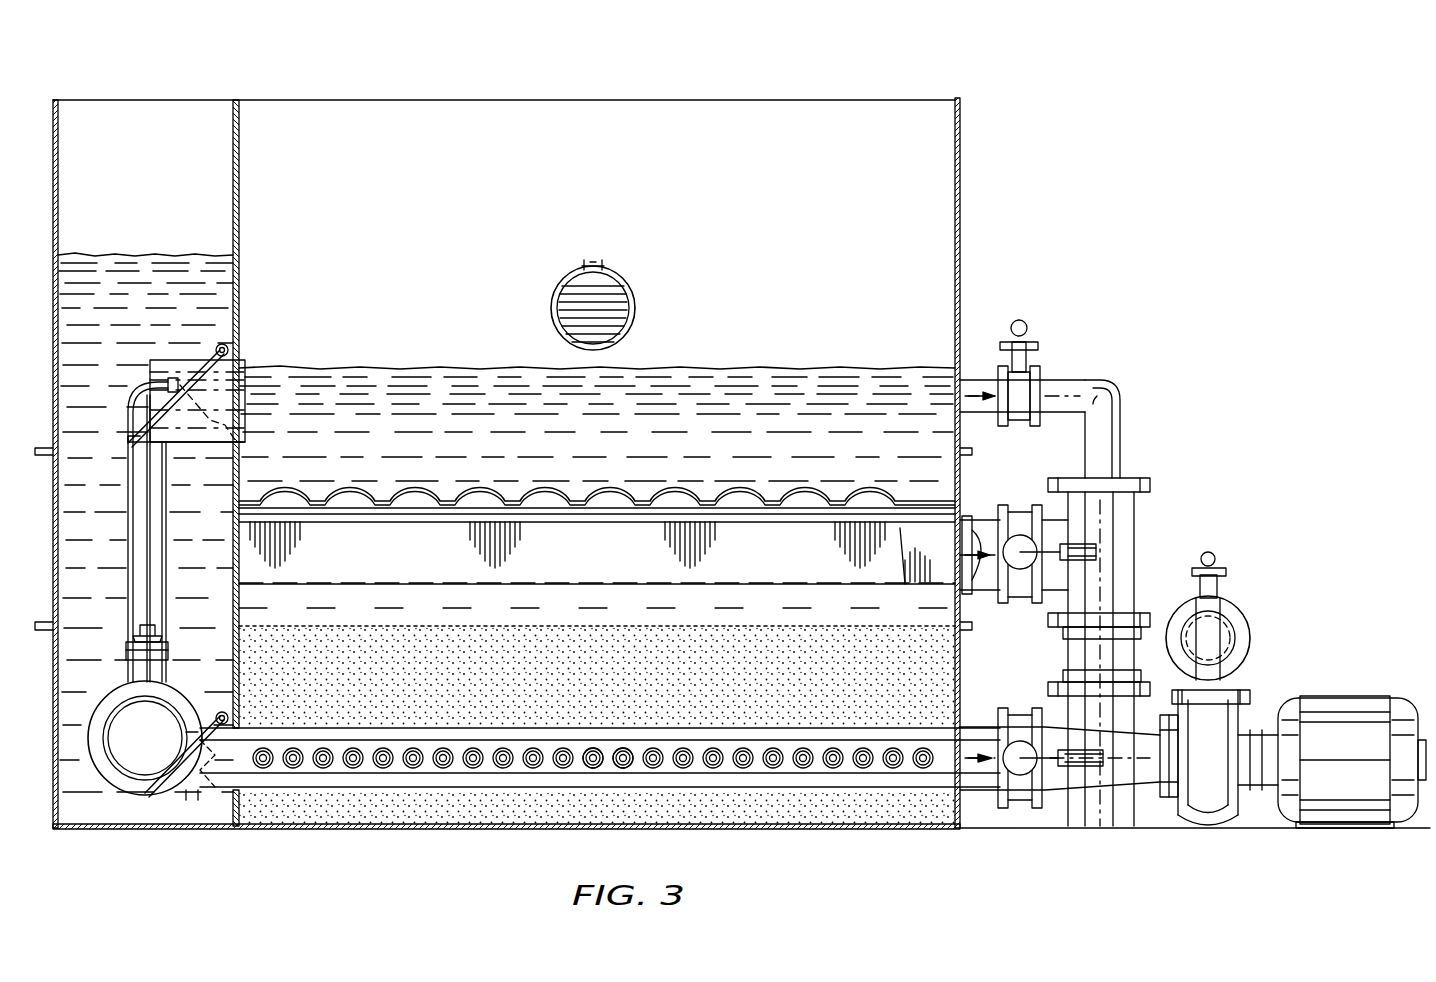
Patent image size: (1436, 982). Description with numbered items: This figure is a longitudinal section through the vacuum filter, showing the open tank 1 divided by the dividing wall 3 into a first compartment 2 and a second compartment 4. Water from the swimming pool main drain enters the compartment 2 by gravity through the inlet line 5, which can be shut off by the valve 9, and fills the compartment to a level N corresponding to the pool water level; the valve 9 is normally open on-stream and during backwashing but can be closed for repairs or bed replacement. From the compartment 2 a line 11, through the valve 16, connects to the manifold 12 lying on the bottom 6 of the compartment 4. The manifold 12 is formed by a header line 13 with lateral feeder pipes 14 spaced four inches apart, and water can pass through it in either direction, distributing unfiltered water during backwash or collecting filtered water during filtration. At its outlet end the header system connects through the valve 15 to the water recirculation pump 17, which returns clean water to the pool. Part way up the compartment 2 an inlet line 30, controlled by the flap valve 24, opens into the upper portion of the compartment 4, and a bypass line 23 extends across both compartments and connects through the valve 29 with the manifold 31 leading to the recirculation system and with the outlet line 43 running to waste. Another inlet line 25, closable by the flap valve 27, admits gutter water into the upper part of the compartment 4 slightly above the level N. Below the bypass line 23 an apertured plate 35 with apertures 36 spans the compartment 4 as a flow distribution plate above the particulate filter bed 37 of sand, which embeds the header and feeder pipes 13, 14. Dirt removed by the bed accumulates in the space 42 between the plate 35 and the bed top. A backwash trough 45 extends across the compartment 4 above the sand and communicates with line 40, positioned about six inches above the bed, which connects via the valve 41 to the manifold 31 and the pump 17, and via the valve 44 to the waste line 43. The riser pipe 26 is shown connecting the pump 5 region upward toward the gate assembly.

The open tank 1 is at (960, 185).
The compartment 2 is at (146, 246).
The dividing wall 3 is at (239, 229).
The compartment 4 is at (420, 249).
The inlet line 5 is at (135, 756).
The bottom 6 is at (370, 832).
The valve 9 is at (168, 632).
The line 11 is at (205, 778).
The manifold 12 is at (335, 714).
The header line 13 is at (490, 738).
The lateral feeder pipes 14 is at (623, 748).
The valve 15 is at (1035, 786).
The valve 16 is at (168, 787).
The water recirculation pump 17 is at (1372, 682).
The bypass line 23 is at (438, 388).
The flap valve 24 is at (203, 376).
The inlet line 25 is at (628, 280).
The riser pipe 26 is at (138, 548).
The valve 27 is at (622, 318).
The valve 29 is at (1018, 430).
The inlet line 30 is at (196, 420).
The manifold 31 is at (1110, 438).
The apertured plate 35 is at (548, 496).
The apertures 36 is at (406, 496).
The particulate filter bed 37 is at (776, 680).
The line 40 is at (975, 518).
The valve 41 is at (1025, 600).
The space 42 is at (498, 618).
The outlet line 43 is at (1236, 644).
The valve 44 is at (1224, 612).
The backwash trough 45 is at (400, 555).
The water level N is at (96, 254).